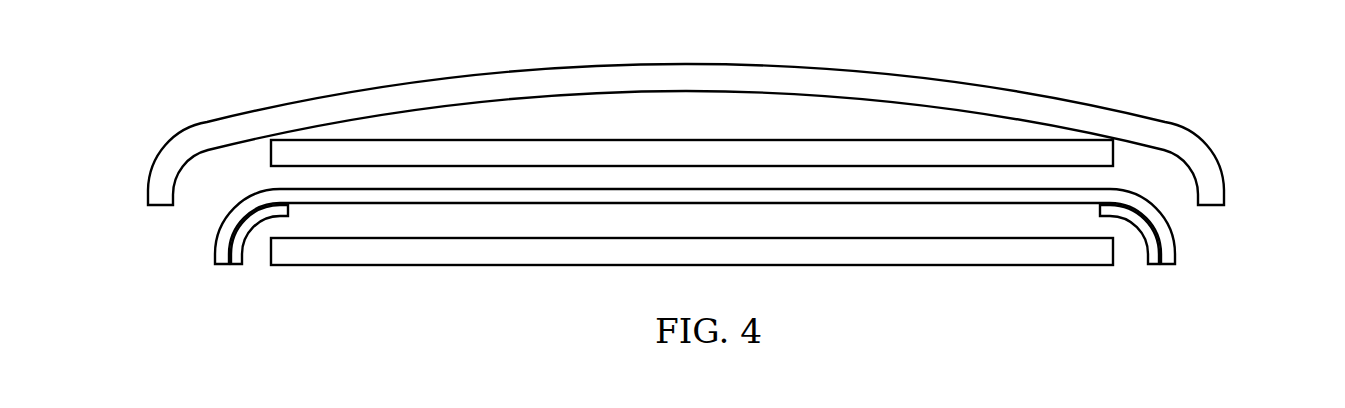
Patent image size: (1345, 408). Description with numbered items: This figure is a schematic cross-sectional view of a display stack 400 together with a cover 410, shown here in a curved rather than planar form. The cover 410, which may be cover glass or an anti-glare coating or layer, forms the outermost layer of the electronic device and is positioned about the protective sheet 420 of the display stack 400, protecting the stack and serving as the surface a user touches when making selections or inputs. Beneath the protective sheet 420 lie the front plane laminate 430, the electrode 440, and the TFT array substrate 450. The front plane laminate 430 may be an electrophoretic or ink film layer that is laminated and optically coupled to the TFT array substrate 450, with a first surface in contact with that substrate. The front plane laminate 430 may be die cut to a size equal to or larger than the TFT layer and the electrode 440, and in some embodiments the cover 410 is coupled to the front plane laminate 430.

The display stack 400 is at (729, 191).
The cover 410 is at (1143, 140).
The protective sheet 420 is at (688, 157).
The front plane laminate 430 is at (222, 243).
The electrode 440 is at (235, 257).
The TFT array substrate 450 is at (873, 257).